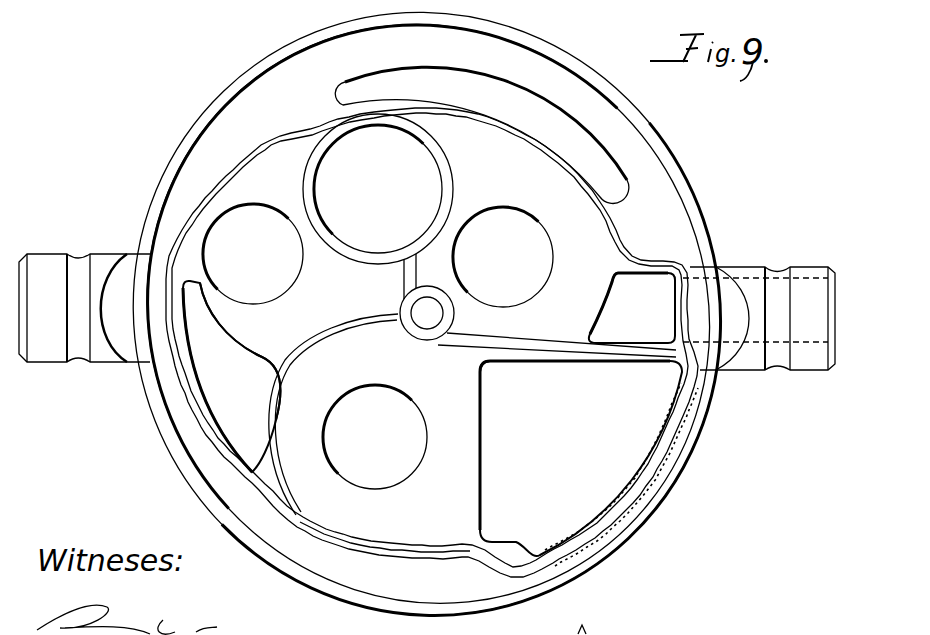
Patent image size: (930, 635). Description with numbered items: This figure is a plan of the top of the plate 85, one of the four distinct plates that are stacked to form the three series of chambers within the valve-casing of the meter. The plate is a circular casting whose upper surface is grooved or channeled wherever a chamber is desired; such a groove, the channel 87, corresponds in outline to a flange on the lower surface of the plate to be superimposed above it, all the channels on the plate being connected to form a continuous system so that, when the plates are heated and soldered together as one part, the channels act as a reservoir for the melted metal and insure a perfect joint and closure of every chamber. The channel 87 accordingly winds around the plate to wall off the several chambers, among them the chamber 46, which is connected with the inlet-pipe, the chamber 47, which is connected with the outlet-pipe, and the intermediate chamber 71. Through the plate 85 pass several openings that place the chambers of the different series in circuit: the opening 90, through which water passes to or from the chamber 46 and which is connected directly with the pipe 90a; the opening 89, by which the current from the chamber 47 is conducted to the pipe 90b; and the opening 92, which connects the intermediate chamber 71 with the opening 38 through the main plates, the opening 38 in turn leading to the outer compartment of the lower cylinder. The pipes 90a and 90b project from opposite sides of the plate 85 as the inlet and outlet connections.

The opening 38 is at (702, 433).
The chamber 46 is at (560, 329).
The chamber 47 is at (330, 313).
The intermediate chamber 71 is at (455, 489).
The plate 85 is at (240, 341).
The channel 87 is at (306, 130).
The opening 89 is at (241, 390).
The opening 90 is at (646, 323).
The opening 92 is at (572, 441).
The pipe 90a is at (759, 318).
The pipe 90b is at (84, 308).